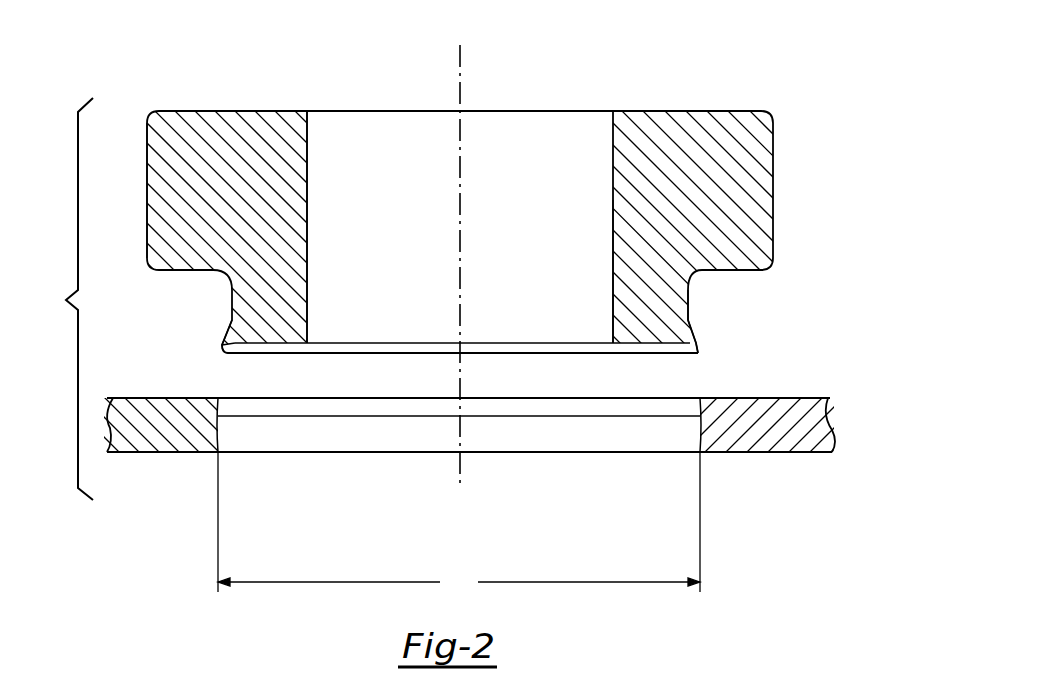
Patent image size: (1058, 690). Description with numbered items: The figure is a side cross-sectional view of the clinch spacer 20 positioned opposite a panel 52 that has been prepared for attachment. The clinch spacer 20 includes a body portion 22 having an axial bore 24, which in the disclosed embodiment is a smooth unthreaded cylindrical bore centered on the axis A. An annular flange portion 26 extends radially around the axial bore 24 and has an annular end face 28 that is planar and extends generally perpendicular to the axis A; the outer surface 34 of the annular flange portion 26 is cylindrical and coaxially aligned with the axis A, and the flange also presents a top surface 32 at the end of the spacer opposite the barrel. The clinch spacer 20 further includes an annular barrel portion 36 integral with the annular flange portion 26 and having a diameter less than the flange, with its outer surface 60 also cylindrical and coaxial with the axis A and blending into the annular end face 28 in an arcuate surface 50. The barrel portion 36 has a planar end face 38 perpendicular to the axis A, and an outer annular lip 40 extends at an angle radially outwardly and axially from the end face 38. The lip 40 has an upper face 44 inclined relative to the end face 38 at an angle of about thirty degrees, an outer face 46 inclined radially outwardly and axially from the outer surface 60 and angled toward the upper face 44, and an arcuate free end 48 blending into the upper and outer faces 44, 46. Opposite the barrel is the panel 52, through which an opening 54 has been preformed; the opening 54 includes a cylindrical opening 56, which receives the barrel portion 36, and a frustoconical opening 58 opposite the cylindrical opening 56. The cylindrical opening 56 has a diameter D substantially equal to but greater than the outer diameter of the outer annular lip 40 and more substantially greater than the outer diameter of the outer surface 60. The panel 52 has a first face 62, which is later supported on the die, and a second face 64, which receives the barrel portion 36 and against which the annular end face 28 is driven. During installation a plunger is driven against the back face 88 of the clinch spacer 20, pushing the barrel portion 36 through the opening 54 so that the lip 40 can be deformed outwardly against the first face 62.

The clinch spacer 20 is at (459, 213).
The body portion 22 is at (205, 128).
The axial bore 24 is at (307, 172).
The annular flange portion 26 is at (752, 160).
The annular end face 28 is at (167, 270).
The top surface 32 is at (266, 108).
The outer surface 34 is at (147, 170).
The annular barrel portion 36 is at (643, 297).
The end face 38 is at (290, 343).
The outer annular lip 40 is at (696, 355).
The upper face 44 is at (243, 345).
The outer face 46 is at (697, 340).
The free end 48 is at (222, 352).
The arcuate surface 50 is at (703, 280).
The panel 52 is at (177, 433).
The opening 54 is at (393, 435).
The cylindrical opening 56 is at (700, 405).
The frustoconical opening 58 is at (222, 418).
The outer surface 60 is at (690, 313).
The first face 62 is at (757, 452).
The second face 64 is at (110, 397).
The back face 88 is at (636, 109).
The axis A is at (460, 78).
The diameter D is at (459, 523).